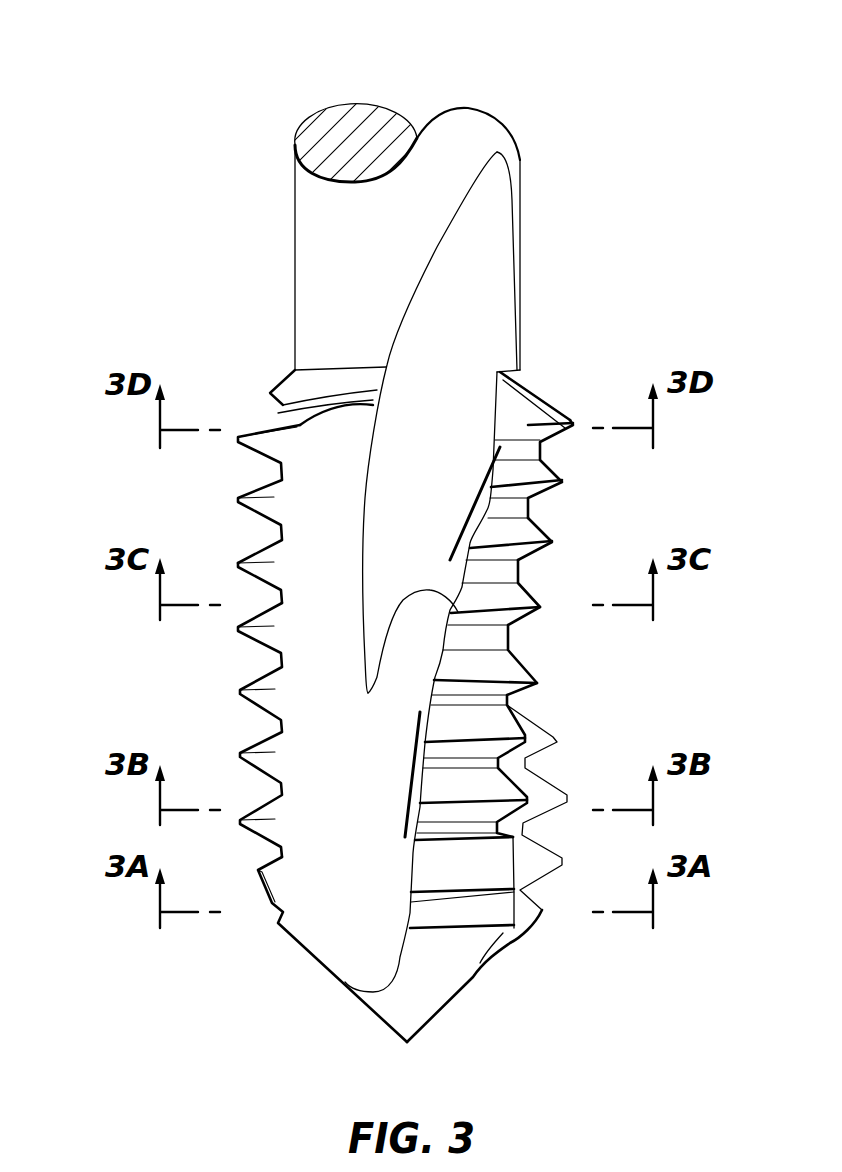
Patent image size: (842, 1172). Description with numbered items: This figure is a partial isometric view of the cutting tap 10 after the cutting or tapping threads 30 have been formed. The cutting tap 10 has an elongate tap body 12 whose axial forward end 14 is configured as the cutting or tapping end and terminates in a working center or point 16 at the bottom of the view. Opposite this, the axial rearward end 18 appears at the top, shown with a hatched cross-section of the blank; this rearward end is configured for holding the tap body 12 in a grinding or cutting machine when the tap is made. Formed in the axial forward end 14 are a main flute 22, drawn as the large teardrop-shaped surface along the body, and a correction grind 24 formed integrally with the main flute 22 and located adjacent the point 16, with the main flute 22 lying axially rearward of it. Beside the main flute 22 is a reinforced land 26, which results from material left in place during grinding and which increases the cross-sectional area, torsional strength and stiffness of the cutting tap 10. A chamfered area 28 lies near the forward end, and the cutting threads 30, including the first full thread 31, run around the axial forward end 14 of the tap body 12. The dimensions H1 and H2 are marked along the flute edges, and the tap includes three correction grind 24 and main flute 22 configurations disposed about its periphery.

The cutting tap 10 is at (157, 155).
The tap body 12 is at (332, 295).
The axial forward end 14 is at (258, 955).
The working center or point 16 is at (407, 1062).
The axial rearward end 18 is at (488, 97).
The main flute 22 is at (418, 443).
The correction grind 24 is at (420, 643).
The reinforced land 26 is at (320, 493).
The chamfered area 28 is at (478, 863).
The cutting or tapping threads 30 is at (245, 578).
The first full thread 31 is at (548, 782).
The height H1 is at (410, 790).
The height H2 is at (478, 493).